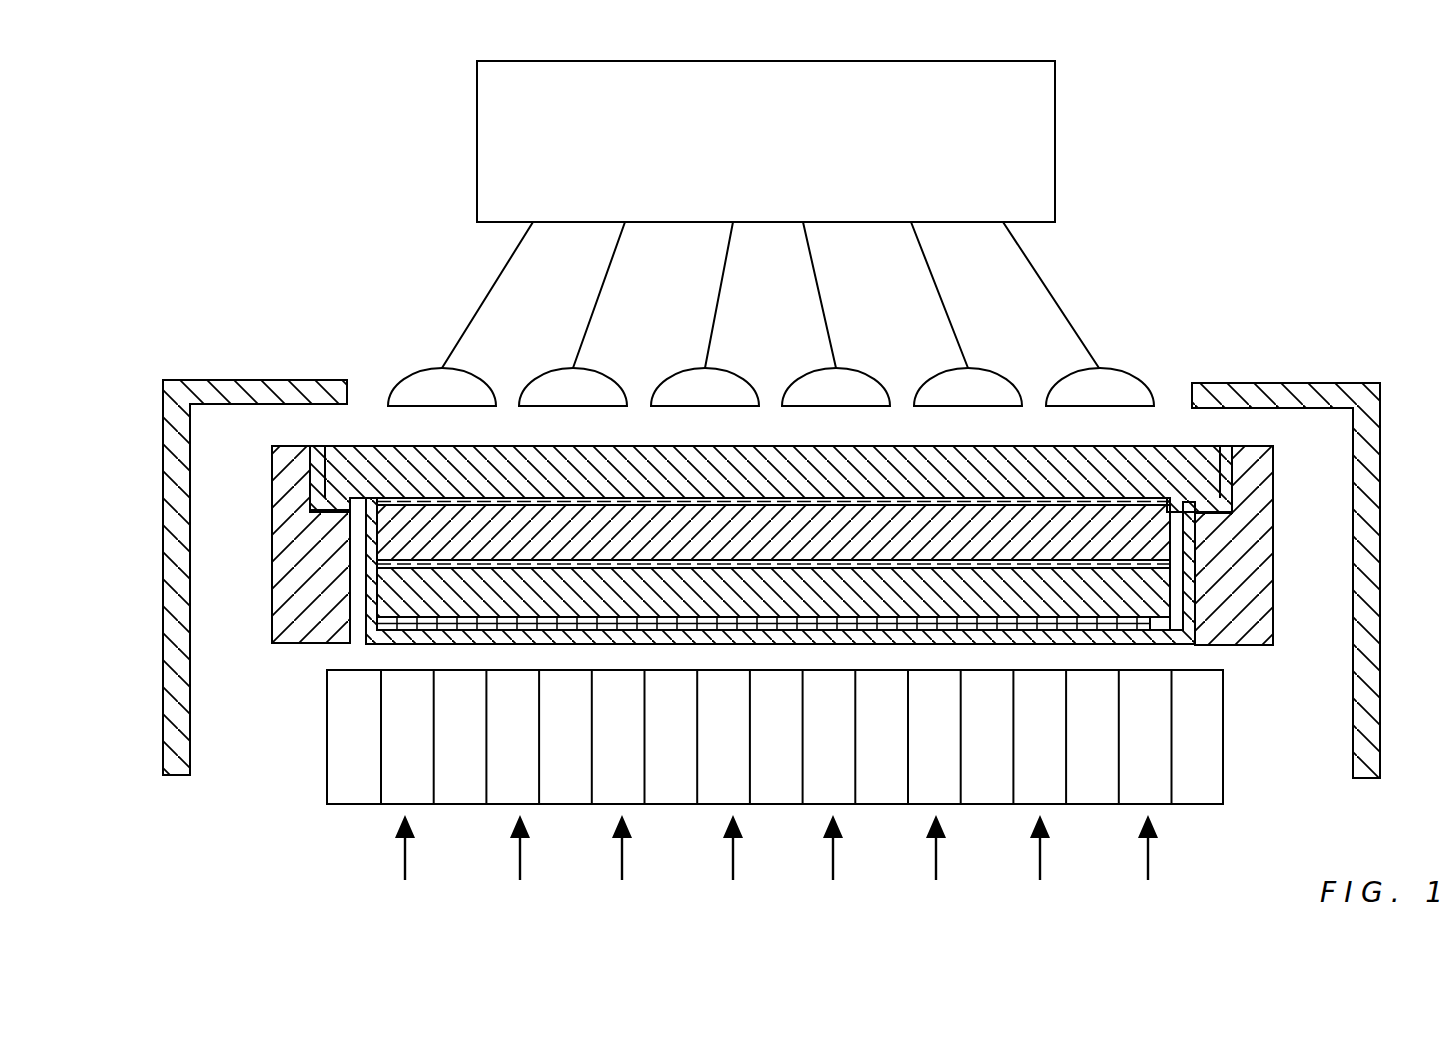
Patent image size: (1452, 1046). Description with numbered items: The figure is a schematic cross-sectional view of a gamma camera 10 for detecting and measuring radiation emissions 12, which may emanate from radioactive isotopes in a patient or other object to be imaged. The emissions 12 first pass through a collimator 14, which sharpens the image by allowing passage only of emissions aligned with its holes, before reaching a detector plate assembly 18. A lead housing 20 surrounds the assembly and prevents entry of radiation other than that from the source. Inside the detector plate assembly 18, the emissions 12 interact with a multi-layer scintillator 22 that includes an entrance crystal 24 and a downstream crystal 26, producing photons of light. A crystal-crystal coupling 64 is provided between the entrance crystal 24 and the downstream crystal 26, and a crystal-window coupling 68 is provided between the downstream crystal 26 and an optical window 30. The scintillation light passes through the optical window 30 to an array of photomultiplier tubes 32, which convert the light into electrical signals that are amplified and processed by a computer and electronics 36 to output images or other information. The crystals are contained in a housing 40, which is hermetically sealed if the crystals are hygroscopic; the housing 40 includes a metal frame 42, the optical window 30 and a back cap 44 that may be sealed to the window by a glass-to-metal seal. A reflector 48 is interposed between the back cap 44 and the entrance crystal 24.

The gamma camera 10 is at (320, 135).
The radiation emissions 12 is at (1148, 855).
The collimator 14 is at (1225, 785).
The detector plate assembly 18 is at (317, 437).
The lead housing 20 is at (172, 408).
The multi-layer scintillator 22 is at (364, 562).
The entrance crystal 24 is at (1183, 648).
The downstream crystal 26 is at (1150, 540).
The optical window 30 is at (1032, 460).
The photomultiplier tubes 32 is at (417, 387).
The computer and electronics 36 is at (1056, 114).
The housing 40 is at (693, 544).
The frame 42 is at (292, 563).
The back cap 44 is at (353, 642).
The reflector 48 is at (450, 627).
The crystal-crystal coupling 64 is at (1158, 585).
The crystal-window coupling 68 is at (1152, 503).